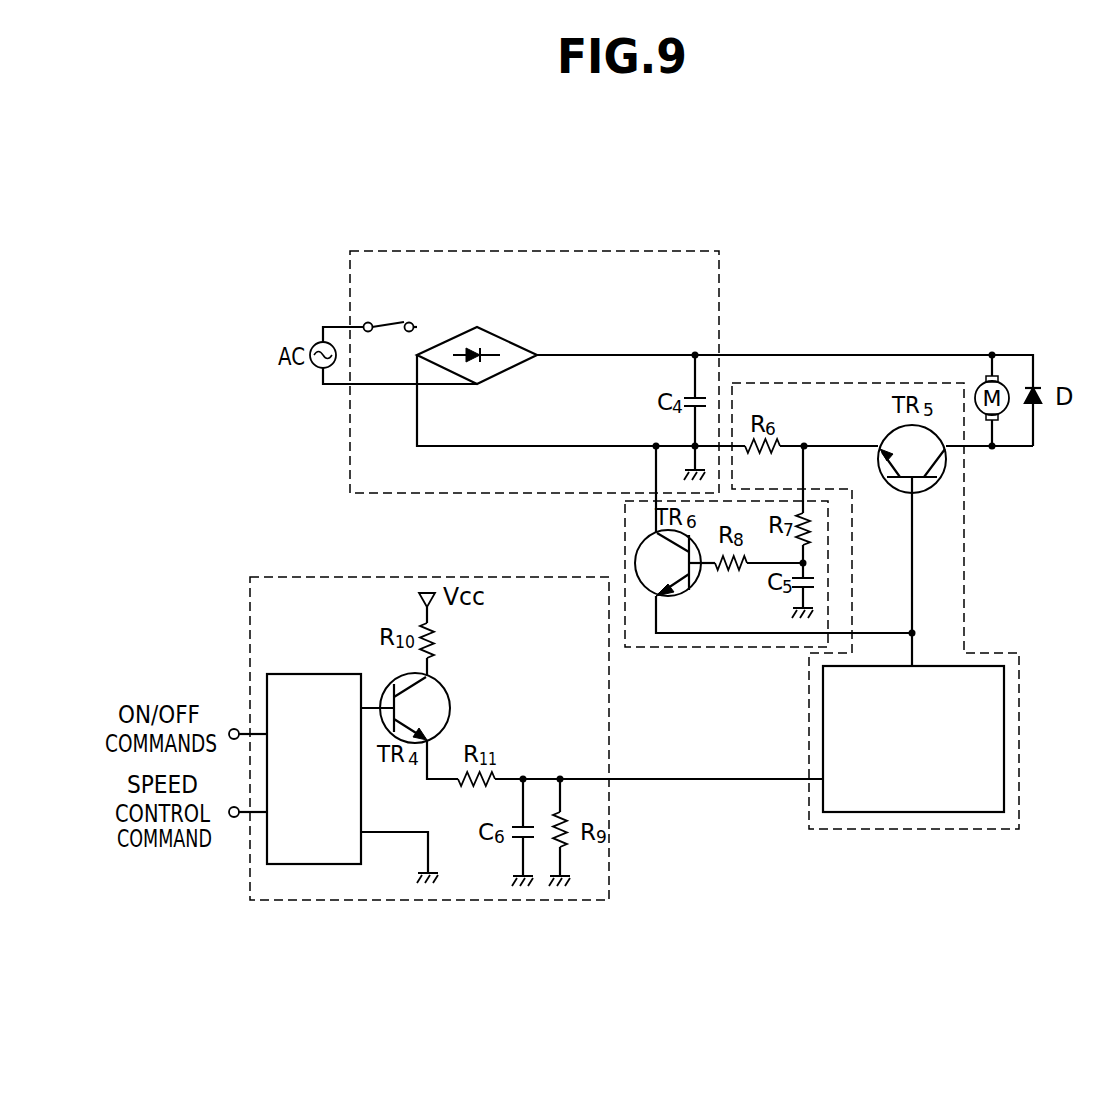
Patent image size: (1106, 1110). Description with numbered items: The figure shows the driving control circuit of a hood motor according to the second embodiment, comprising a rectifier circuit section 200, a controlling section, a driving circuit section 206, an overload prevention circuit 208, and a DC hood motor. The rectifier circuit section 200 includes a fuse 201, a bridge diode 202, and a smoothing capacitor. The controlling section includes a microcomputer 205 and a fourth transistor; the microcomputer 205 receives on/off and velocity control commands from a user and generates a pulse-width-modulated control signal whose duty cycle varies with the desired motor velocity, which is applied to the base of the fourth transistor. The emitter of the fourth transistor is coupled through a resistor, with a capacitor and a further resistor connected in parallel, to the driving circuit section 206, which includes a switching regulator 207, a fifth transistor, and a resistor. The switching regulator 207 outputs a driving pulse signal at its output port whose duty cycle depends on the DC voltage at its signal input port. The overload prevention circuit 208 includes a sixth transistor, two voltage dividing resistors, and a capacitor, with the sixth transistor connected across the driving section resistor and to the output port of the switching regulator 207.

The rectifier circuit section 200 is at (533, 251).
The fuse 201 is at (388, 326).
The bridge diode 202 is at (510, 343).
The microcomputer 205 is at (326, 674).
The driving circuit section 206 is at (964, 535).
The switching regulator 207 is at (1004, 720).
The overload prevention circuit 208 is at (625, 522).